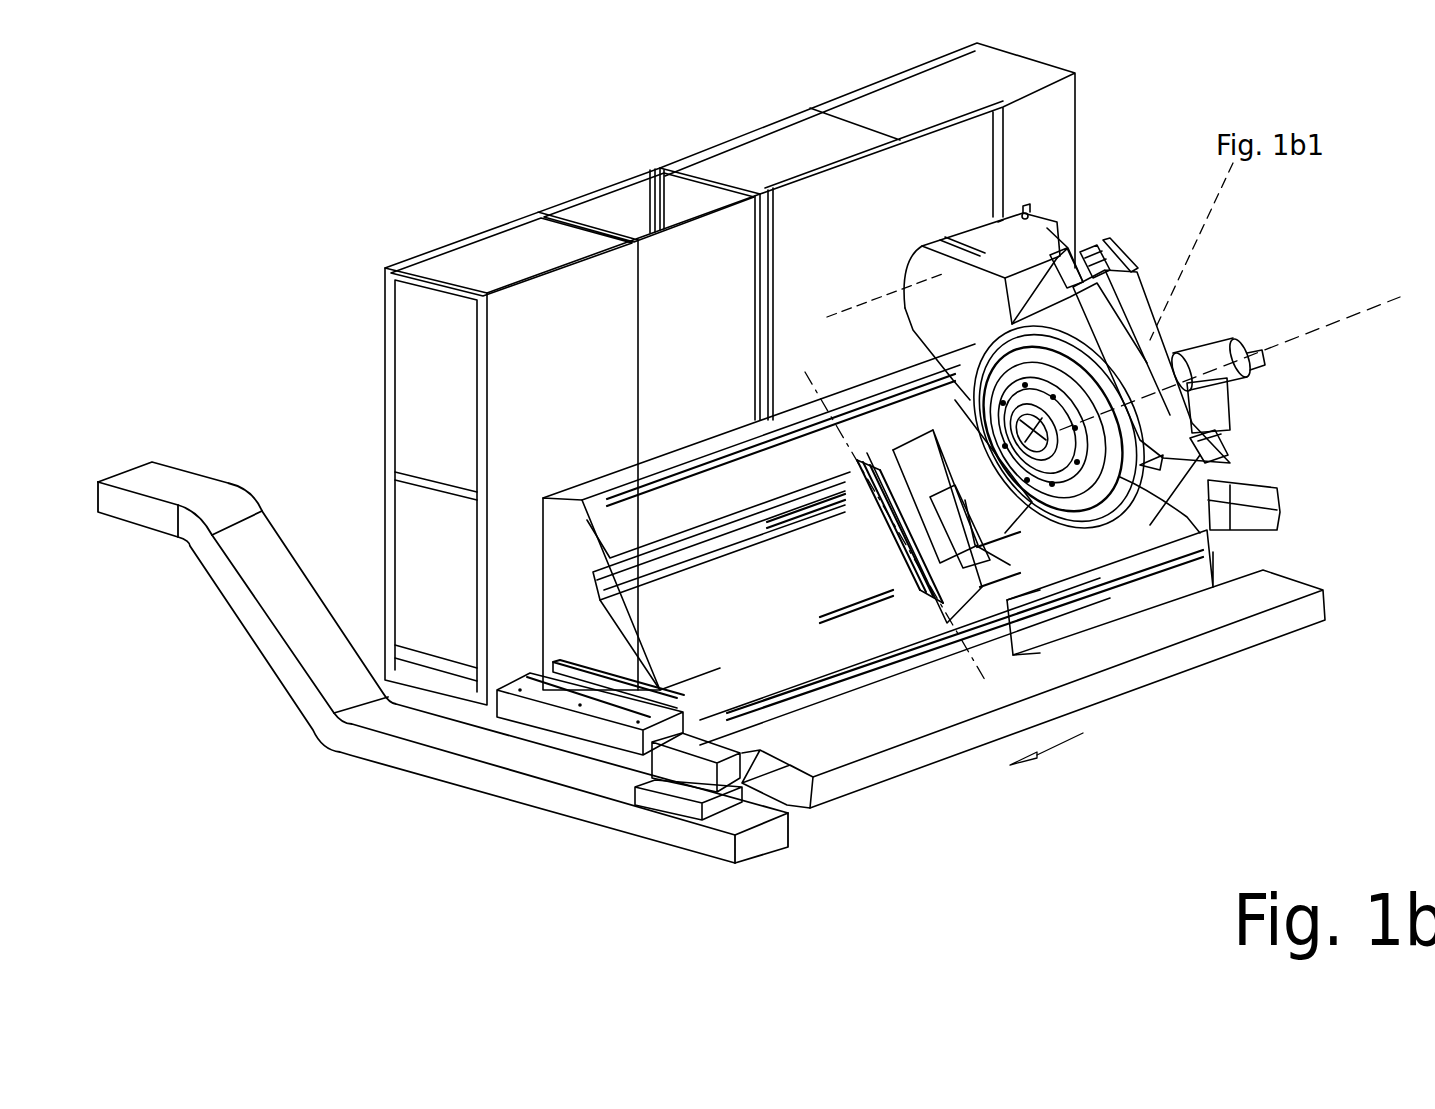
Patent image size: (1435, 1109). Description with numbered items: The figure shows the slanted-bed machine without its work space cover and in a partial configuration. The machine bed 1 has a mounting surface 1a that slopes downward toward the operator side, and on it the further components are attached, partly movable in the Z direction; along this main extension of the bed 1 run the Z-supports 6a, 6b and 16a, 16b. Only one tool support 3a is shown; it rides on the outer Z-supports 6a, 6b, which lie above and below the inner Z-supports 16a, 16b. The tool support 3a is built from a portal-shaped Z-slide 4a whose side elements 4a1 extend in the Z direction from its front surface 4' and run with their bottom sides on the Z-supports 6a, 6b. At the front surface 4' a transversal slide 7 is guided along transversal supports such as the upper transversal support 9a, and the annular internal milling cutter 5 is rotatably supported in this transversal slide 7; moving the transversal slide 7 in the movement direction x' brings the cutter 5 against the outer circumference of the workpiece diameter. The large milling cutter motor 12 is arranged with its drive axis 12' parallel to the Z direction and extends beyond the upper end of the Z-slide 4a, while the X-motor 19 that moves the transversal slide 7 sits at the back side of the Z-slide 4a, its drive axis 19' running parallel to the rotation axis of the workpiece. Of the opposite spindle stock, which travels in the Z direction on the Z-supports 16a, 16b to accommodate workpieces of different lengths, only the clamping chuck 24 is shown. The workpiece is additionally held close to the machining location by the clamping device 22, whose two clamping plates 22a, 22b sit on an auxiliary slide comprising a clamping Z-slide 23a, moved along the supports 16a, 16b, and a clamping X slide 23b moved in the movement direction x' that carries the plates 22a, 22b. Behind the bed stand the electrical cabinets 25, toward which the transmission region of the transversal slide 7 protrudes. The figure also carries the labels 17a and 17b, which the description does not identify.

The machine bed 1 is at (759, 517).
The mounting surface 1a is at (655, 547).
The tool support 3a is at (1133, 195).
The front surface 4' is at (1125, 337).
The Z-slide 4a is at (1173, 563).
The side element 4a1 is at (1207, 532).
The internal milling cutter 5 is at (1032, 473).
The Z-support 6a is at (643, 490).
The Z-support 6b is at (788, 702).
The transversal slide 7 is at (1178, 698).
The upper transversal support 9a is at (1085, 262).
The milling cutter motor 12 is at (991, 229).
The drive axis 12' is at (881, 281).
The Z-support 16a is at (775, 523).
The Z-support 16b is at (820, 607).
The slide 17a is at (990, 633).
The slide 17b is at (603, 740).
The X-motor 19 is at (1216, 362).
The drive axis 19' is at (1230, 363).
The clamping device 22 is at (937, 420).
The clamping plate 22a is at (924, 459).
The clamping plate 22b is at (961, 526).
The clamping Z-slide 23a is at (895, 560).
The clamping X slide 23b is at (900, 512).
The clamping chuck 24 is at (1020, 430).
The electrical cabinets 25 is at (730, 374).
The movement direction X' x' is at (876, 523).
The Z direction Z is at (1057, 748).